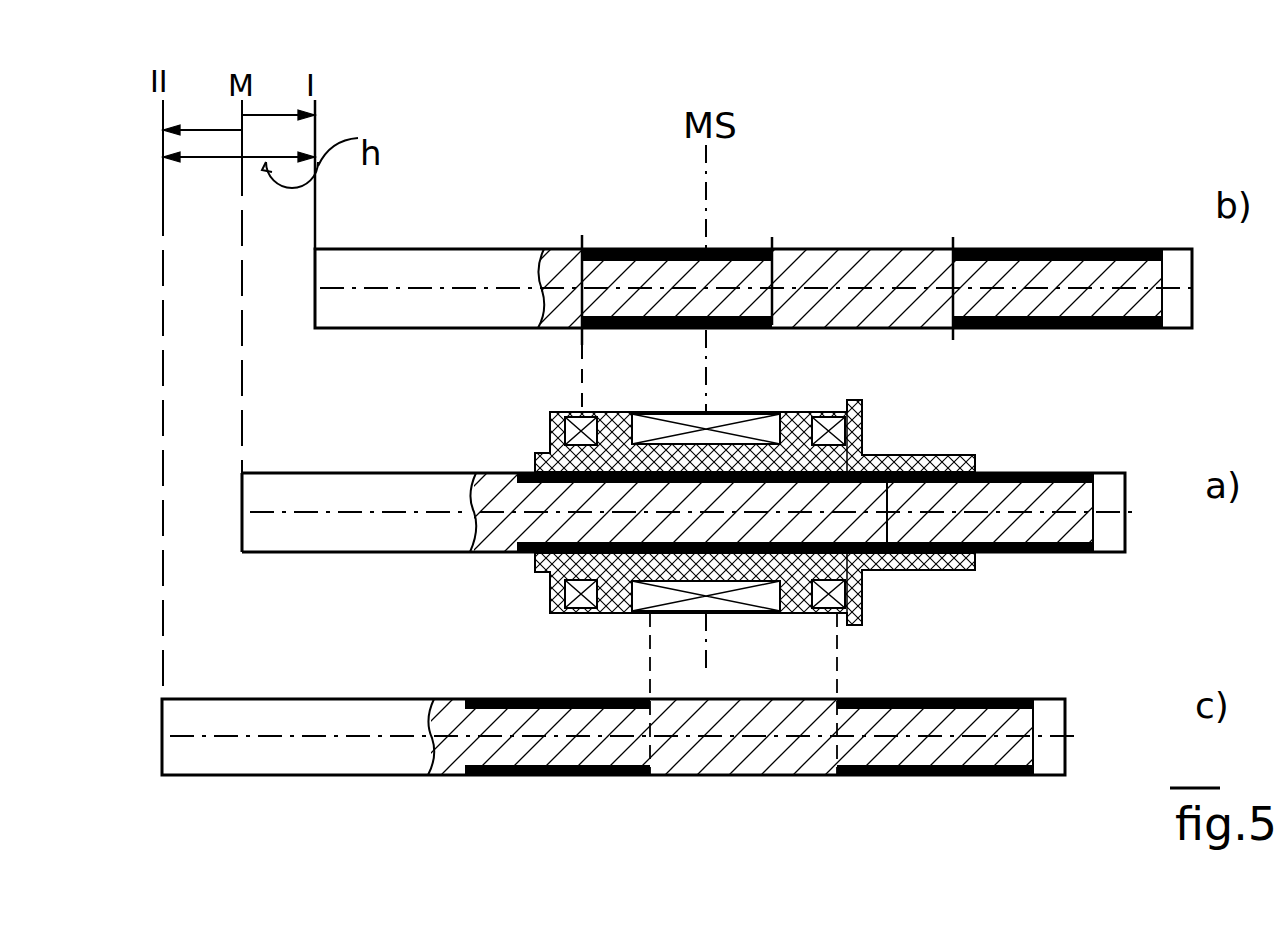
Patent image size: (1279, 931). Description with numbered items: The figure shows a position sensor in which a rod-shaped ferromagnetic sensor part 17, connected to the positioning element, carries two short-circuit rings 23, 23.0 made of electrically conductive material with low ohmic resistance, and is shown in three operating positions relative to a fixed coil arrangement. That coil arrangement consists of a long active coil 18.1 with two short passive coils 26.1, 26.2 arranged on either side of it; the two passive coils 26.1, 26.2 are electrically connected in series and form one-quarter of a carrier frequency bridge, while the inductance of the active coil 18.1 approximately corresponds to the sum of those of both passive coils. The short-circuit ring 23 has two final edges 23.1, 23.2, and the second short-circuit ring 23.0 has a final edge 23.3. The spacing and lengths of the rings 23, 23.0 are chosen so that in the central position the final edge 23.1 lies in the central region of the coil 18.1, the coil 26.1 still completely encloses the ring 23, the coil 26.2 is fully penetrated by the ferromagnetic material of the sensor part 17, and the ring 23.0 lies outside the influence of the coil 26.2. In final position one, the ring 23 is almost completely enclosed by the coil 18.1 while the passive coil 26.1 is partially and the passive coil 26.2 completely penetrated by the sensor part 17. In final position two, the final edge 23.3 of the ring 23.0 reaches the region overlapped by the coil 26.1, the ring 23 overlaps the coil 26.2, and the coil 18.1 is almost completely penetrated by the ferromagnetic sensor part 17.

The sensor part 17 is at (340, 530).
The short-circuit ring 23 is at (672, 248).
The short-circuit ring 23.0 is at (1069, 248).
The final edge 23.1 is at (772, 251).
The final edge 23.2 is at (582, 249).
The final edge 23.3 is at (953, 251).
The passive coil 26.1 is at (582, 411).
The passive coil 26.2 is at (830, 411).
The active coil 18.1 is at (764, 413).